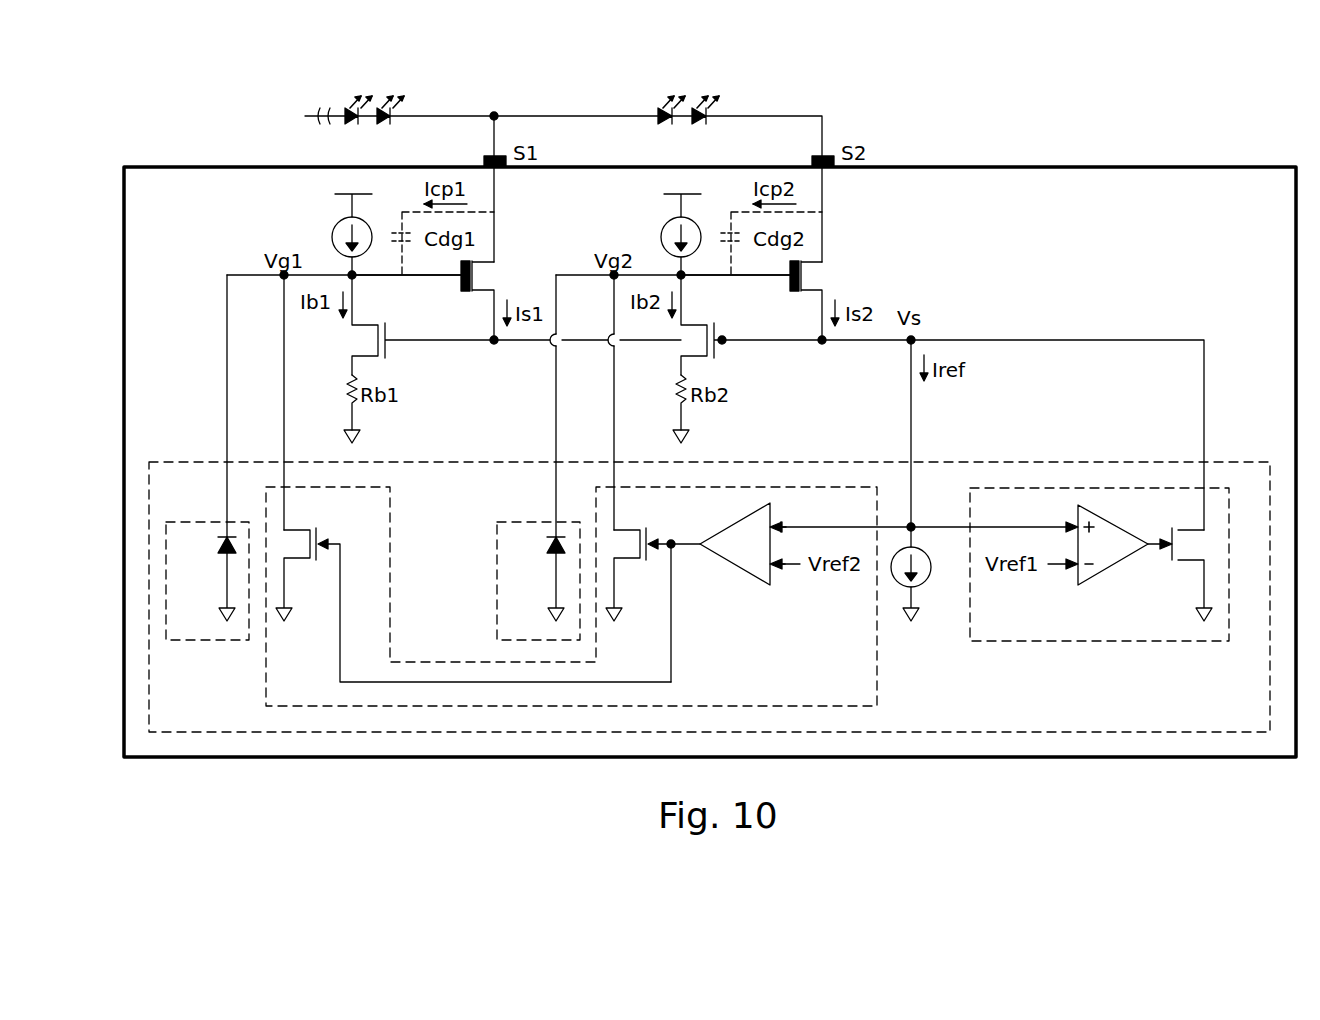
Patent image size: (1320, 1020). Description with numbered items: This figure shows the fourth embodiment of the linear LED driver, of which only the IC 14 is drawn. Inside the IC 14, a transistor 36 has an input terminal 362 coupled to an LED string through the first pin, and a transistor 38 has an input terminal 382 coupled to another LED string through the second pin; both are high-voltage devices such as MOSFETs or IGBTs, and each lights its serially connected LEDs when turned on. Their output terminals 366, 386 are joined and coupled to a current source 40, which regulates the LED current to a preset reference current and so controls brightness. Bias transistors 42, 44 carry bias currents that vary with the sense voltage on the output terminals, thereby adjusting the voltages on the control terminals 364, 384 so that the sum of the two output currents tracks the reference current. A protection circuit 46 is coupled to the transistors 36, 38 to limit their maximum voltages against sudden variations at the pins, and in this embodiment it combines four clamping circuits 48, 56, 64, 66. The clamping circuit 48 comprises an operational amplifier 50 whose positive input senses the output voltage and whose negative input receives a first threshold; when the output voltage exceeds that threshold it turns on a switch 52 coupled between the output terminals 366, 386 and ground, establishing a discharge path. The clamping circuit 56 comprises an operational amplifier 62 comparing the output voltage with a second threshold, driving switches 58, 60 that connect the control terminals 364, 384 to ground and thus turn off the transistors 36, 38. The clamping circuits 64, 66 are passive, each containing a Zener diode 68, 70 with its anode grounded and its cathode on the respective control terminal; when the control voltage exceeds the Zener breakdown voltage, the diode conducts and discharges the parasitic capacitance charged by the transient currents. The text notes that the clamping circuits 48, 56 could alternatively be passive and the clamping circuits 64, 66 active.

The IC 14 is at (1098, 166).
The input terminal 362 is at (496, 184).
The input terminal 382 is at (824, 184).
The transistor 36 is at (504, 274).
The transistor 38 is at (833, 274).
The control terminal 364 is at (432, 278).
The control terminal 384 is at (761, 278).
The output terminal 366 is at (494, 348).
The output terminal 386 is at (822, 348).
The transistor 42 is at (346, 348).
The transistor 44 is at (674, 348).
The current source 40 is at (929, 577).
The protection circuit 46 is at (832, 462).
The clamping circuit 48 is at (1098, 641).
The operational amplifier 50 is at (1116, 520).
The switch 52 is at (1168, 567).
The clamping circuit 56 is at (877, 650).
The switch 58 is at (321, 523).
The switch 60 is at (651, 523).
The operational amplifier 62 is at (751, 568).
The clamping circuit 64 is at (206, 522).
The clamping circuit 66 is at (536, 522).
The Zener diode 68 is at (223, 545).
The Zener diode 70 is at (553, 545).